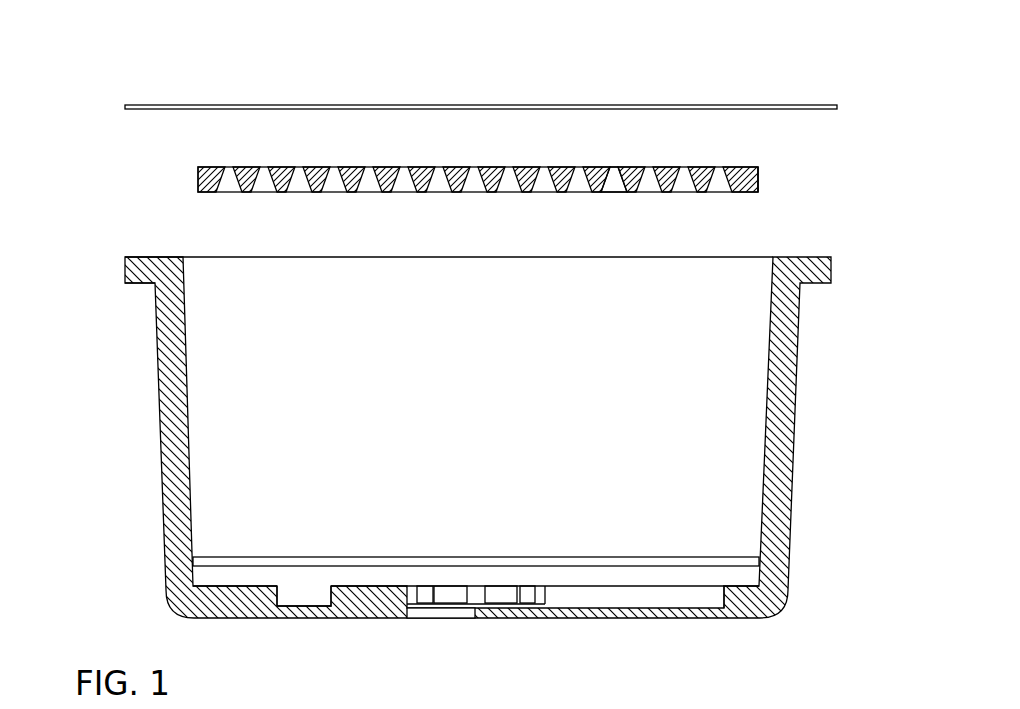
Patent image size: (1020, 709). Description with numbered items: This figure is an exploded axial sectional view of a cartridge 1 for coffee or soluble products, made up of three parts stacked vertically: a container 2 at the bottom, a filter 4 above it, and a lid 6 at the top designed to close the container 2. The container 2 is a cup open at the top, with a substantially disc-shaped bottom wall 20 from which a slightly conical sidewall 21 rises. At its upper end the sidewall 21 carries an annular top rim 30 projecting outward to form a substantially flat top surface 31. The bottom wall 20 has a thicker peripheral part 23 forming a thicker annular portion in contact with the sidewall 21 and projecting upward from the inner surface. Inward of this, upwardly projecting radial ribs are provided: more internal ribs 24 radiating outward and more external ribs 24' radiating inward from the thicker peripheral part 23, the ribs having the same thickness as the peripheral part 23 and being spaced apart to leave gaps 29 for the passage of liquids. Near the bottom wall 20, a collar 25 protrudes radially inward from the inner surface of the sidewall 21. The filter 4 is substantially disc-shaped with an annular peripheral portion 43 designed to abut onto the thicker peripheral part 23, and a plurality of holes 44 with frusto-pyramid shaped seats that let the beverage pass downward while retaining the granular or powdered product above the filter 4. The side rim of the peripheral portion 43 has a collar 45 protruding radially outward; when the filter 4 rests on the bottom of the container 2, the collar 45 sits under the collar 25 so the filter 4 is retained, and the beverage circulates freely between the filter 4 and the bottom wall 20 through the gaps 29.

The cartridge 1 is at (812, 393).
The container 2 is at (151, 393).
The filter 4 is at (178, 172).
The lid 6 is at (179, 88).
The bottom wall 20 is at (613, 614).
The sidewall 21 is at (172, 485).
The thicker peripheral part 23 is at (745, 608).
The more internal ribs 24 is at (393, 639).
The more external ribs 24' is at (235, 640).
The collar 25 is at (220, 562).
The gaps 29 is at (304, 591).
The annular top rim 30 is at (146, 277).
The top surface 31 is at (150, 255).
The annular peripheral portion 43 is at (637, 177).
The holes 44 is at (612, 184).
The collar 45 is at (759, 177).